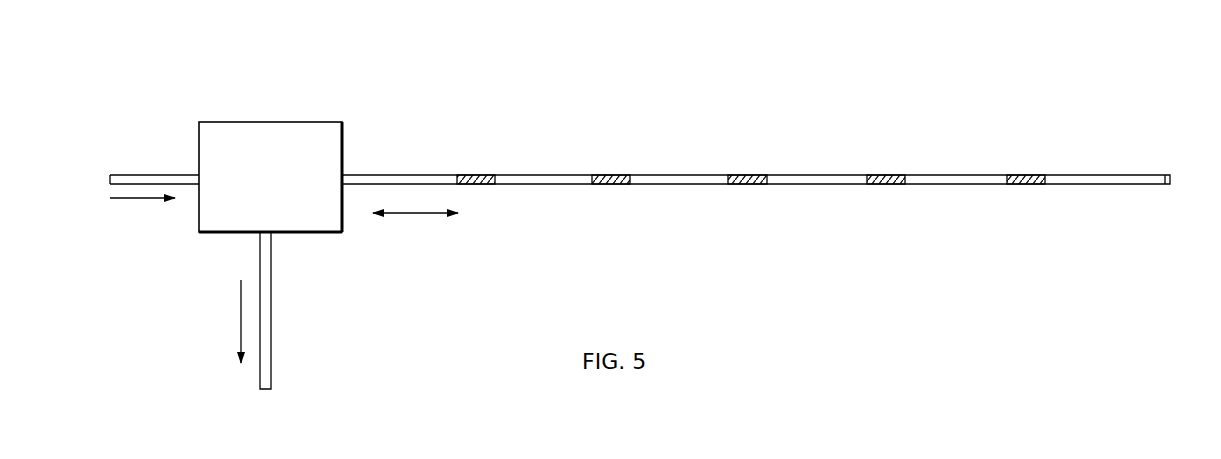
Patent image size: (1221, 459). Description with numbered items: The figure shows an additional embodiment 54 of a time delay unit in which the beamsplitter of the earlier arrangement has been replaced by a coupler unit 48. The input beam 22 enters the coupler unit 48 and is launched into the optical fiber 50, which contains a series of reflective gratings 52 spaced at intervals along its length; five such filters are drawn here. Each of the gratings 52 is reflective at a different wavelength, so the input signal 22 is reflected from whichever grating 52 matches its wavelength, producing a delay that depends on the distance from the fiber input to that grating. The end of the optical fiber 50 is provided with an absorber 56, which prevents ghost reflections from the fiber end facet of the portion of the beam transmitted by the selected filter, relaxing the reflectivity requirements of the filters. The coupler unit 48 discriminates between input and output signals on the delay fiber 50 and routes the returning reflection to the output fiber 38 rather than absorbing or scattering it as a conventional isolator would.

The additional embodiment of a time delay unit 54 is at (203, 80).
The coupler unit 48 is at (266, 122).
The input beam 22 is at (190, 185).
The output fiber 38 is at (269, 268).
The optical fiber 50 is at (358, 174).
The reflective gratings 52 is at (477, 186).
The absorber 56 is at (1168, 188).